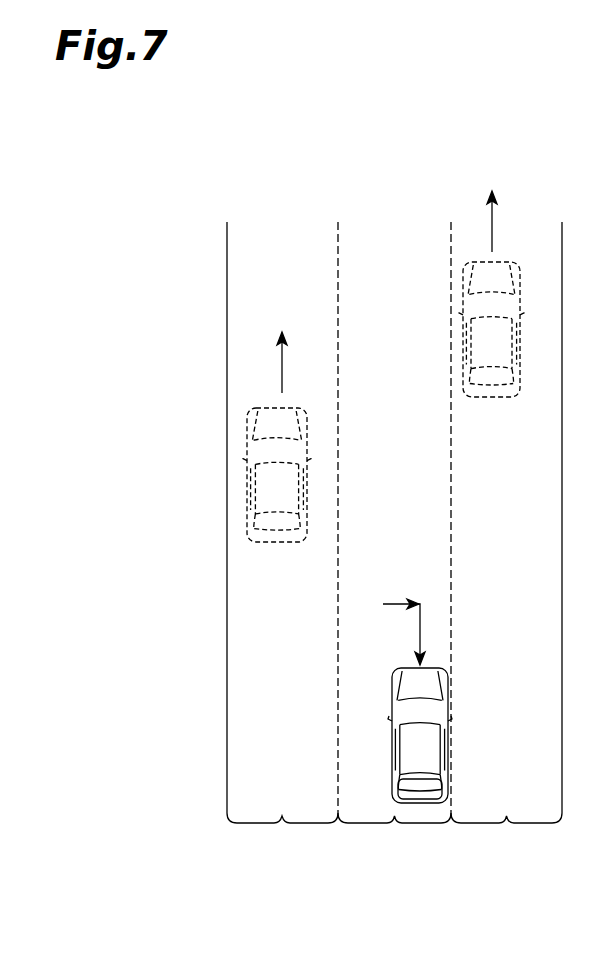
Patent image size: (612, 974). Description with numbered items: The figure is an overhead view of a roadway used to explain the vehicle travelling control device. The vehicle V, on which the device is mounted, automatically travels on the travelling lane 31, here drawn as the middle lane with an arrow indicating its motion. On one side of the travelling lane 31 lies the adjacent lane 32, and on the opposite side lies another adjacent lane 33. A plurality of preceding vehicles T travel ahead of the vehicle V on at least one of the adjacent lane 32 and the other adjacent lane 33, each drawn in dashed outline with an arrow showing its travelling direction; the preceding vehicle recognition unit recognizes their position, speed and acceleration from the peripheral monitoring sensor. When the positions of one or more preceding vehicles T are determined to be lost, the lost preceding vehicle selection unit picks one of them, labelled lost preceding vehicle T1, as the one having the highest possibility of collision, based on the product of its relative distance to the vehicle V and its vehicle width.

The lost preceding vehicle T1 is at (287, 543).
The preceding vehicle T is at (497, 398).
The vehicle V is at (450, 749).
The travelling lane 31 is at (394, 537).
The adjacent lane 32 is at (506, 537).
The another adjacent lane 33 is at (282, 537).